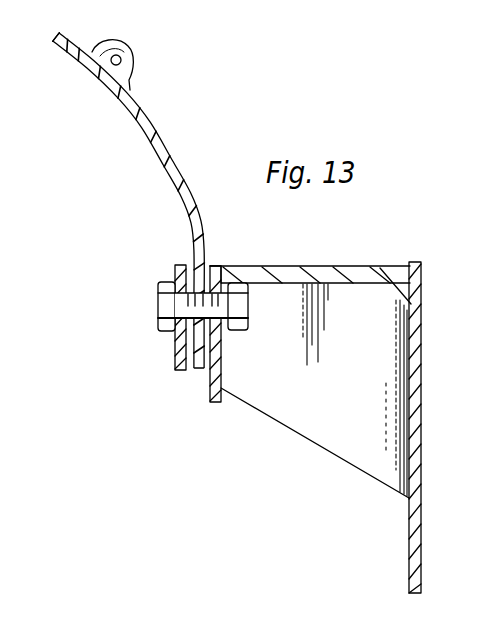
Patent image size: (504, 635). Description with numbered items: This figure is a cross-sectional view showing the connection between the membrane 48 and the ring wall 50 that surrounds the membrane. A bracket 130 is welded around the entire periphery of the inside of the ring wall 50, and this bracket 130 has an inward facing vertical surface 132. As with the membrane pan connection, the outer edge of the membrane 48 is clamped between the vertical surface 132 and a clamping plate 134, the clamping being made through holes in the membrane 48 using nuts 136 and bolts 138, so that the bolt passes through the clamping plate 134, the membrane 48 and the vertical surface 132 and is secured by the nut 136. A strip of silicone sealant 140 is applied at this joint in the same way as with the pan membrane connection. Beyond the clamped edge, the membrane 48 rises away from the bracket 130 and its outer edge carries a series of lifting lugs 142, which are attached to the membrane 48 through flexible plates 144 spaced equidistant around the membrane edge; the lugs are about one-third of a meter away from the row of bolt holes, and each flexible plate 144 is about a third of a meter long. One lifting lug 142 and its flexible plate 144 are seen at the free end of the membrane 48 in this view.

The membrane 48 is at (180, 167).
The ring wall 50 is at (423, 421).
The bracket 130 is at (326, 285).
The vertical surface 132 is at (209, 397).
The clamping plate 134 is at (174, 360).
The nuts 136 is at (243, 331).
The bolts 138 is at (158, 322).
The strip of silicone sealant 140 is at (211, 268).
The lifting lugs 142 is at (132, 48).
The flexible plates 144 is at (66, 44).